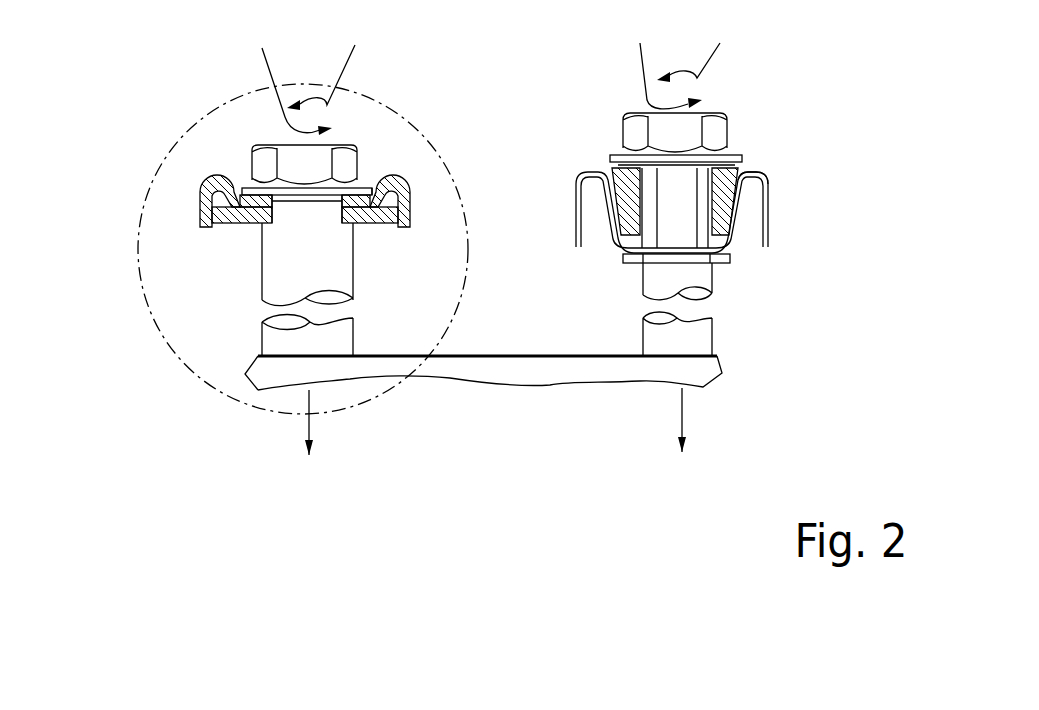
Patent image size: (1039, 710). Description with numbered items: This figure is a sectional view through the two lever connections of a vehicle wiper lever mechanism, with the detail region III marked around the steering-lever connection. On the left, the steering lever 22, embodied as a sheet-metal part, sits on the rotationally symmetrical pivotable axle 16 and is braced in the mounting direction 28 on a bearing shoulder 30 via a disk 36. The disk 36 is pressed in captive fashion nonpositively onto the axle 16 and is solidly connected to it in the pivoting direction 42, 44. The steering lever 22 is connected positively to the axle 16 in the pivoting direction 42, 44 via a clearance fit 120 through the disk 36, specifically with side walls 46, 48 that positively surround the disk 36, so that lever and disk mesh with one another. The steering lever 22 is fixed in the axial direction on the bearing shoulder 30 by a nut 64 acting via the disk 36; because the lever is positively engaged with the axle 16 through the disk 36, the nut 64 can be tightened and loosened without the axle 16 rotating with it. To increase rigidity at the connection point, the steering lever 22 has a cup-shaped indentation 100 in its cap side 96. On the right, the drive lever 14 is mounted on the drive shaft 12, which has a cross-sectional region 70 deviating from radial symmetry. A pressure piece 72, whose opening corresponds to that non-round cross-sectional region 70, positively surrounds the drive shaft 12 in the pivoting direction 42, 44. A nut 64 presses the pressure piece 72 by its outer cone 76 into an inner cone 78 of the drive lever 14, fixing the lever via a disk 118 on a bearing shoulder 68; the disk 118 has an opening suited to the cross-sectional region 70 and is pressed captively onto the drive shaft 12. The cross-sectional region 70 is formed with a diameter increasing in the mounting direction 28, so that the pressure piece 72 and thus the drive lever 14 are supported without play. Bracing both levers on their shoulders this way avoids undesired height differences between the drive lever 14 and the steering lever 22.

The drive shaft 12 is at (703, 333).
The drive lever 14 is at (580, 247).
The pivotable axle 16 is at (281, 346).
The steering lever 22 is at (408, 228).
The mounting direction 28 is at (307, 430).
The bearing shoulder 30 is at (262, 227).
The disk 36 is at (228, 222).
The pivoting direction 42 is at (516, 58).
The pivoting direction 44 is at (468, 71).
The side wall 46 is at (205, 202).
The side wall 48 is at (402, 206).
The nut 64 is at (260, 157).
The bearing shoulder 68 is at (640, 263).
The cross-sectional region deviating from radial symmetry 70 is at (703, 220).
The pressure piece 72 is at (722, 180).
The outer cone 76 is at (760, 178).
The inner cone 78 is at (622, 187).
The cap side 96 is at (242, 195).
The cup-shaped indentation 100 is at (372, 196).
The disk 118 is at (730, 259).
The clearance fit 120 is at (399, 226).
The detail section III is at (462, 303).